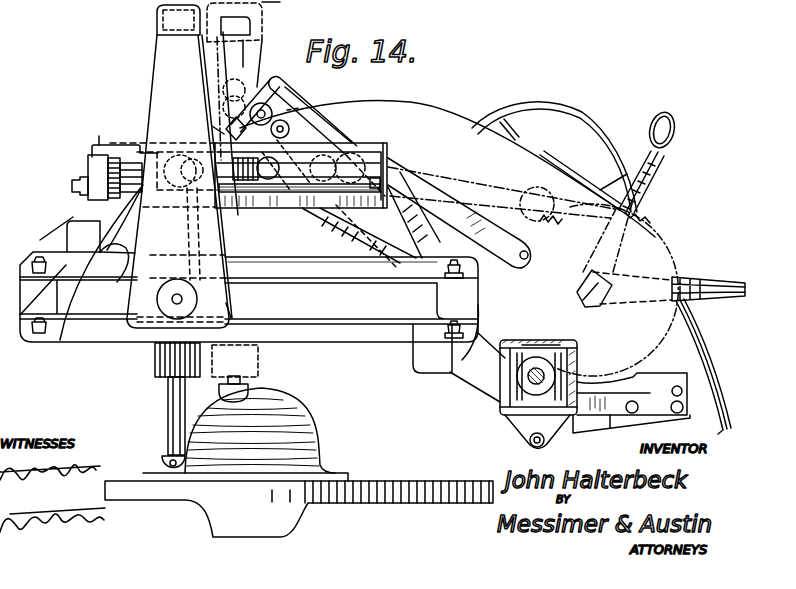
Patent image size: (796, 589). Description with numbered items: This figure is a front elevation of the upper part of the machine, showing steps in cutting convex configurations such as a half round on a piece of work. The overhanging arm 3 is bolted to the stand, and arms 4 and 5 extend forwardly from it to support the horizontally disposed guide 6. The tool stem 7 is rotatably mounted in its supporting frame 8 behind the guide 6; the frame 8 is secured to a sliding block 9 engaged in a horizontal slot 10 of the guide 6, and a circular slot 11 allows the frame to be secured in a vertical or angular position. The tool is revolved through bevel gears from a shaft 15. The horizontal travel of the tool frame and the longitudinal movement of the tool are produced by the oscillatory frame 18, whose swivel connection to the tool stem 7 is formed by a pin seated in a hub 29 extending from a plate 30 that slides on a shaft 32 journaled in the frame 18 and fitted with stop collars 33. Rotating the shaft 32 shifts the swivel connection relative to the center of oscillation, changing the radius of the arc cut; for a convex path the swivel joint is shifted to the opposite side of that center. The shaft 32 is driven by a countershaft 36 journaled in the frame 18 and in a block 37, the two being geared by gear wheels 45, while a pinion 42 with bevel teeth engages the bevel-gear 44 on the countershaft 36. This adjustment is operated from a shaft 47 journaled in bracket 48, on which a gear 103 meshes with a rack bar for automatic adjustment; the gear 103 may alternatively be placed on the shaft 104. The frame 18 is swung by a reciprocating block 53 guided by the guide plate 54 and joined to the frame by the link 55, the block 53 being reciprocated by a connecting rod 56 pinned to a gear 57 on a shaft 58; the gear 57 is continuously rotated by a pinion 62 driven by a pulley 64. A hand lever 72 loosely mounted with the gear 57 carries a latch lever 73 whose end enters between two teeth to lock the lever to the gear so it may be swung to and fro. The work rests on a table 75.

The overhanging arm 3 is at (413, 123).
The arm 4 is at (76, 217).
The arm 5 is at (422, 355).
The guide 6 is at (103, 335).
The tool stem 7 is at (248, 381).
The supporting frame 8 is at (157, 108).
The sliding block 9 is at (230, 311).
The horizontal slot 10 is at (332, 283).
The circular slot 11 is at (124, 234).
The shaft 15 is at (172, 300).
The oscillatory frame 18 is at (296, 238).
The hub 29 is at (178, 150).
The plate 30 is at (98, 233).
The shaft 32 is at (388, 160).
The stop collars 33 is at (390, 180).
The countershaft 36 is at (133, 147).
The block 37 is at (363, 5).
The pinion 42 is at (277, 168).
The bevel-gear 44 is at (258, 198).
The gear wheels 45 is at (103, 182).
The shaft 47 is at (527, 380).
The bracket 48 is at (652, 387).
The lever 53 is at (273, 81).
The guide plate 54 is at (300, 108).
The link 55 is at (212, 127).
The connecting rod 56 is at (447, 207).
The gear 57 is at (668, 254).
The shaft 58 is at (593, 300).
The pinion 62 is at (534, 208).
The pulley 64 is at (597, 133).
The hand lever 72 is at (655, 173).
The latch lever 73 is at (712, 281).
The table 75 is at (370, 490).
The gear 103 is at (545, 345).
The shaft 104 is at (530, 442).